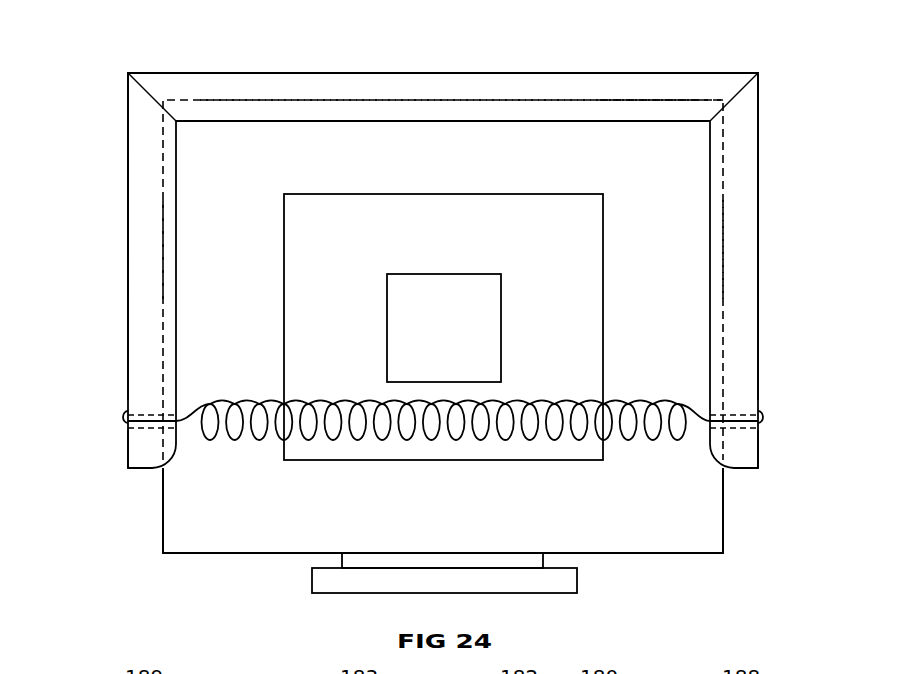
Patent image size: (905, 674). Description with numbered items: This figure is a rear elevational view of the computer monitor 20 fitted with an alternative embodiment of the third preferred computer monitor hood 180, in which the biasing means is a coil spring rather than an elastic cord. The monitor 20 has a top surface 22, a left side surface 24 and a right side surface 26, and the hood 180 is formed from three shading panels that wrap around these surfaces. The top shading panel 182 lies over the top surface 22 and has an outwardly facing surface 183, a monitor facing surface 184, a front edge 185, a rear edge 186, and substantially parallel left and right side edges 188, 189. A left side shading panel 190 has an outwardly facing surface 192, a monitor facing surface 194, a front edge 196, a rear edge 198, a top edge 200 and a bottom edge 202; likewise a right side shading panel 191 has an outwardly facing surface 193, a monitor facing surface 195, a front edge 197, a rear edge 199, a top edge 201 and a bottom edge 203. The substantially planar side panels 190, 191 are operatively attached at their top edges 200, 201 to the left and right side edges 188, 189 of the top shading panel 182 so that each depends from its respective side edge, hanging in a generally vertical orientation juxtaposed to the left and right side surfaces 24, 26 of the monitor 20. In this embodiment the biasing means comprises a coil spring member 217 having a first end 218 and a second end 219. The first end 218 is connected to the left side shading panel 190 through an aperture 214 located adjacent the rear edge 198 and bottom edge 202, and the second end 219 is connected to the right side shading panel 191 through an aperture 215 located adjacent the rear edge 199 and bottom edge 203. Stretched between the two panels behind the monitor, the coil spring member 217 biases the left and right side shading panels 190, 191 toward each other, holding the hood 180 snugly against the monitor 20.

The computer monitor 20 is at (205, 583).
The top surface 22 is at (435, 100).
The left side surface 24 is at (723, 542).
The right side surface 26 is at (163, 540).
The computer monitor hood 180 is at (583, 88).
The top shading panel 182 is at (500, 88).
The outwardly facing surface 183 is at (345, 73).
The monitor facing surface 184 is at (378, 121).
The front edge 185 is at (277, 92).
The rear edge 186 is at (600, 105).
The left side edge 188 is at (758, 73).
The right side edge 189 is at (128, 72).
The left side shading panel 190 is at (748, 150).
The right side shading panel 191 is at (142, 135).
The outwardly facing surface 192 is at (758, 205).
The outwardly facing surface 193 is at (128, 205).
The monitor facing surface 194 is at (710, 270).
The monitor facing surface 195 is at (176, 265).
The front edge 196 is at (745, 240).
The front edge 197 is at (143, 255).
The rear edge 198 is at (745, 315).
The rear edge 199 is at (142, 328).
The top edge 200 is at (758, 73).
The top edge 201 is at (128, 73).
The bottom edge 202 is at (745, 470).
The bottom edge 203 is at (140, 470).
The aperture 214 is at (733, 418).
The aperture 215 is at (152, 418).
The coil spring member 217 is at (341, 440).
The first end 218 is at (758, 420).
The second end 219 is at (124, 420).